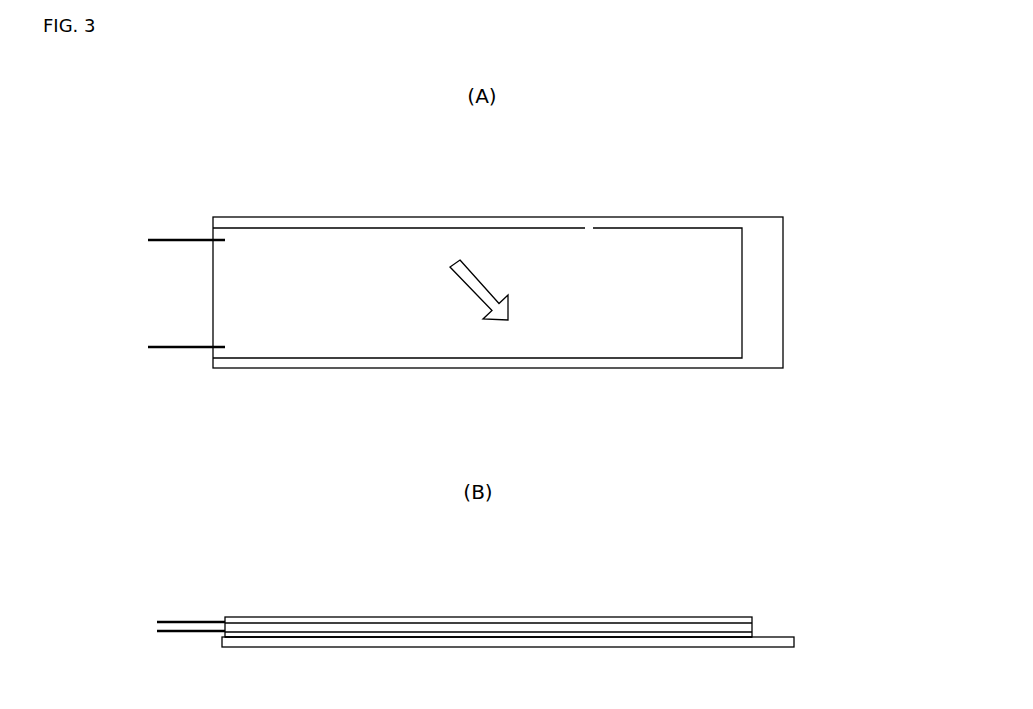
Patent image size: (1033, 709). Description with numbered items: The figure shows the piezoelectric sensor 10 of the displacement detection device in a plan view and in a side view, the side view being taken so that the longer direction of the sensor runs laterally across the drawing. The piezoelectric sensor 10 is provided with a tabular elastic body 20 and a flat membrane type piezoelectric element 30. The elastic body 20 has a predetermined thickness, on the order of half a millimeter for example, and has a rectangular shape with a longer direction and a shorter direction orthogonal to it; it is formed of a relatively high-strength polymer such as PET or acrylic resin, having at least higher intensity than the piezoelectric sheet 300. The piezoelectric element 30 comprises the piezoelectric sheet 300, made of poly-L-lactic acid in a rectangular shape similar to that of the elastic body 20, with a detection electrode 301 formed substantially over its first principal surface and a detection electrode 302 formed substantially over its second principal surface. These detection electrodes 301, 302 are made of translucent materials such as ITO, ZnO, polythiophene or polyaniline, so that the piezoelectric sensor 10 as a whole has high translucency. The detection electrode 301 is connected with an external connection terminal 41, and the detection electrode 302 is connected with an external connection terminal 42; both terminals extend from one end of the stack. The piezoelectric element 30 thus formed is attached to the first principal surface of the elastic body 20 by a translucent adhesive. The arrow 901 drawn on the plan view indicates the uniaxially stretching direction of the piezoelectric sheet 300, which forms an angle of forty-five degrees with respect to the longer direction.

The piezoelectric sensor 10 is at (503, 411).
The elastic body 20 is at (752, 362).
The piezoelectric element 30 is at (482, 406).
The piezoelectric sheet 300 is at (476, 621).
The detection electrode 301 is at (525, 627).
The detection electrode 302 is at (562, 634).
The external connection terminal 41 is at (175, 237).
The external connection terminal 42 is at (172, 345).
The direction arrow 901 is at (482, 293).